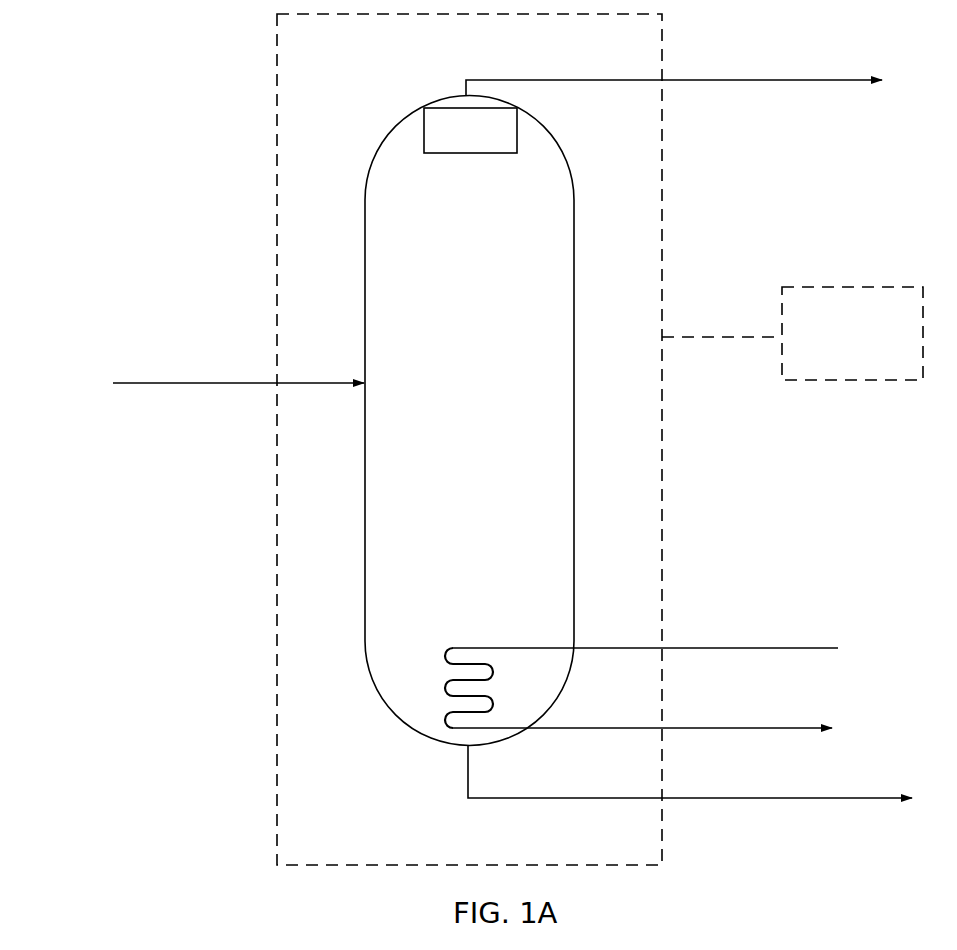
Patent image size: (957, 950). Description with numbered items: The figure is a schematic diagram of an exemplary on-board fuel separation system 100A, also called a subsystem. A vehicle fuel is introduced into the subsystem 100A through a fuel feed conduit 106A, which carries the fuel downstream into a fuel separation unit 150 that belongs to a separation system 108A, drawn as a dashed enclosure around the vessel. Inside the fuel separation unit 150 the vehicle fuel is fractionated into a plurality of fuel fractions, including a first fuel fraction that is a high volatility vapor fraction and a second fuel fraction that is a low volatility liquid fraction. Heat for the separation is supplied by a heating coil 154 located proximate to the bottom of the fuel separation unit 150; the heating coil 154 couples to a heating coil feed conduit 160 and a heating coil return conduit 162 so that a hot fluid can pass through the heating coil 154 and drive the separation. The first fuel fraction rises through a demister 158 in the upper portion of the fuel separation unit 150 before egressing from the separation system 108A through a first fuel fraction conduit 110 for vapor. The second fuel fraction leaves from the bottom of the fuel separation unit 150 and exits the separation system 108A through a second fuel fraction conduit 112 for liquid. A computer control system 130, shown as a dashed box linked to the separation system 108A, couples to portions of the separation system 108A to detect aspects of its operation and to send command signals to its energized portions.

The on-board fuel separation system 100A is at (160, 178).
The separation system 108A is at (275, 40).
The fuel feed conduit 106A is at (258, 384).
The first fuel fraction conduit 110 is at (681, 68).
The second fuel fraction conduit 112 is at (700, 799).
The computer control system 130 is at (792, 333).
The fuel separation unit 150 is at (469, 421).
The heating coil 154 is at (470, 645).
The demister 158 is at (470, 130).
The heating coil feed conduit 160 is at (677, 653).
The heating coil return conduit 162 is at (677, 736).